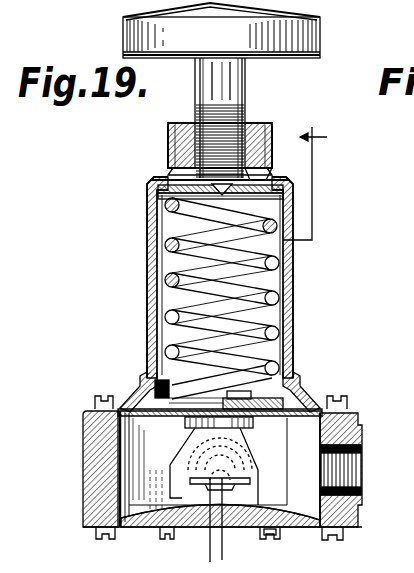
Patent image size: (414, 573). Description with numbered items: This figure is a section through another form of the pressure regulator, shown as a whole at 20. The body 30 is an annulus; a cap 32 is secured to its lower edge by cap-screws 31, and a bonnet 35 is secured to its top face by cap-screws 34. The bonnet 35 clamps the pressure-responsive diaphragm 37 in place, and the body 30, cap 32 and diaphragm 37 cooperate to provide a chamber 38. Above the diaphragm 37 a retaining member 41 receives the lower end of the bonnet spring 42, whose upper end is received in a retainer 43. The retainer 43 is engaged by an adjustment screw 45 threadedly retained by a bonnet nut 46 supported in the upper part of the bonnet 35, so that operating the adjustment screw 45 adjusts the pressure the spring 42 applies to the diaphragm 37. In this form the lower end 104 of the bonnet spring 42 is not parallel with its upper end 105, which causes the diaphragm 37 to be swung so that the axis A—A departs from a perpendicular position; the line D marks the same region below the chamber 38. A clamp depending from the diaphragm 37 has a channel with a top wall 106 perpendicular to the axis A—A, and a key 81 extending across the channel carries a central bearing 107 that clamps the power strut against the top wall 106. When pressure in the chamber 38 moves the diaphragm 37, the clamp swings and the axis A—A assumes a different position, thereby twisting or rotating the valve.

The pressure regulator 20 is at (204, 555).
The body 30 is at (83, 474).
The cap-screws 31 is at (97, 537).
The cap 32 is at (141, 530).
The cap-screws 34 is at (97, 402).
The bonnet 35 is at (298, 374).
The diaphragm 37 is at (138, 408).
The chamber 38 is at (158, 447).
The retaining member 41 is at (144, 380).
The bonnet spring 42 is at (165, 248).
The retainer 43 is at (166, 210).
The adjustment screw 45 is at (270, 165).
The bonnet nut 46 is at (178, 148).
The key 81 is at (243, 523).
The lower end of bonnet spring 104 is at (302, 394).
The upper end of bonnet spring 105 is at (158, 189).
The top wall 106 is at (234, 470).
The central bearing 107 is at (232, 486).
The axis A— A is at (201, 520).
The axis D is at (228, 519).